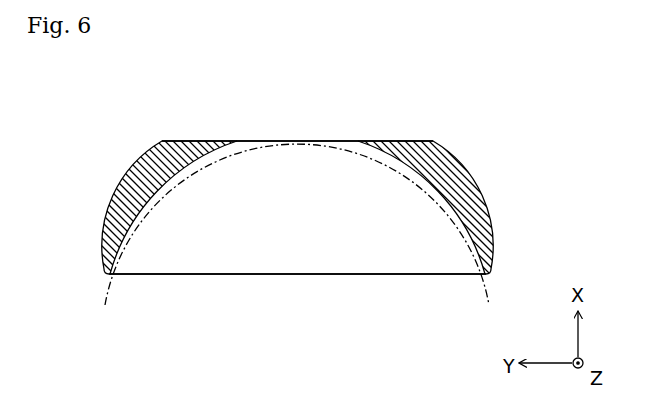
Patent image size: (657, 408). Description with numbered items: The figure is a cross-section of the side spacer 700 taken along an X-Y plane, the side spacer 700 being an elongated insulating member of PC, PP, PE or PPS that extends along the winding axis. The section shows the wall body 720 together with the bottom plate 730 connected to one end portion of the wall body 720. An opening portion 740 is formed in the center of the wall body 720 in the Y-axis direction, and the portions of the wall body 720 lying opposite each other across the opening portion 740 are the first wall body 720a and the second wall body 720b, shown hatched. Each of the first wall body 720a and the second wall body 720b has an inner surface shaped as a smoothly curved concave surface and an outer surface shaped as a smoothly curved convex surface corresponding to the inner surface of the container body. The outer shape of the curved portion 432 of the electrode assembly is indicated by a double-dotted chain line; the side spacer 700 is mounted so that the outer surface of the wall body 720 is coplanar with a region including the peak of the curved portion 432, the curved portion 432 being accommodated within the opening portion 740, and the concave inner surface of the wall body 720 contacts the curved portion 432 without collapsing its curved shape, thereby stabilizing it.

The side spacer 700 is at (292, 84).
The wall body 720 is at (407, 136).
The first wall body 720a is at (125, 160).
The second wall body 720b is at (470, 165).
The opening portion 740 is at (327, 138).
The bottom plate 730 is at (297, 266).
The curved portion 432 is at (99, 310).